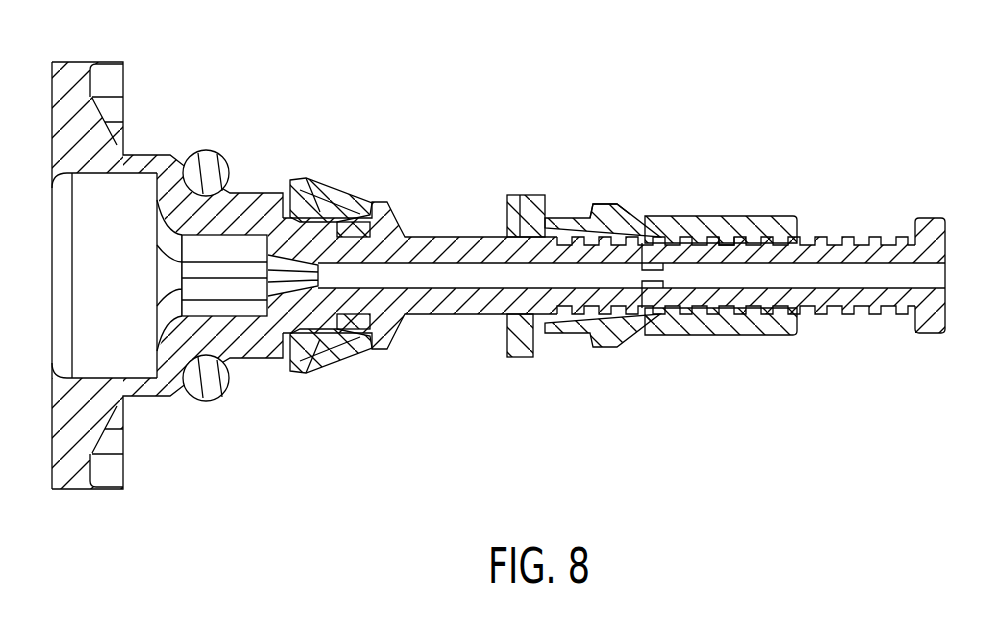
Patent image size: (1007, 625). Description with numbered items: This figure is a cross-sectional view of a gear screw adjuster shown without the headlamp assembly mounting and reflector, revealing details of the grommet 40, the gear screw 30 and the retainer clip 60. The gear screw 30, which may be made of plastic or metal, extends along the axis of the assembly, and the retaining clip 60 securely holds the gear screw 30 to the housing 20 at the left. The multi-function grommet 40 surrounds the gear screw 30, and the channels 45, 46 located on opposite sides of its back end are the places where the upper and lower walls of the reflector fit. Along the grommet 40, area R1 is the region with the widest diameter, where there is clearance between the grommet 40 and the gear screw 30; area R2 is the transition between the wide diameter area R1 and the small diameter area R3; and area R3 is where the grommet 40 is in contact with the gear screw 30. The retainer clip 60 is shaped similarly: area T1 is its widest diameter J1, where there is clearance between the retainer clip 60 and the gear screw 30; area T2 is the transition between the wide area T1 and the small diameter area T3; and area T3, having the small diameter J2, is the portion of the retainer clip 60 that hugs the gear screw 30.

The housing 20 is at (68, 73).
The gear screw 30 is at (933, 247).
The multi-function grommet 40 is at (771, 230).
The channel 45 is at (582, 189).
The channel 46 is at (535, 335).
The retaining clip 60 is at (320, 373).
The widest diameter area of the retainer clip T1 is at (297, 187).
The transition area of the retainer clip T2 is at (325, 193).
The small diameter area of the retainer clip T3 is at (367, 201).
The widest diameter of the retainer clip J1 is at (308, 368).
The small diameter of the retainer clip J2 is at (362, 355).
The widest diameter area of the grommet R1 is at (523, 211).
The transition area of the grommet R2 is at (623, 185).
The small diameter area of the grommet R3 is at (735, 238).